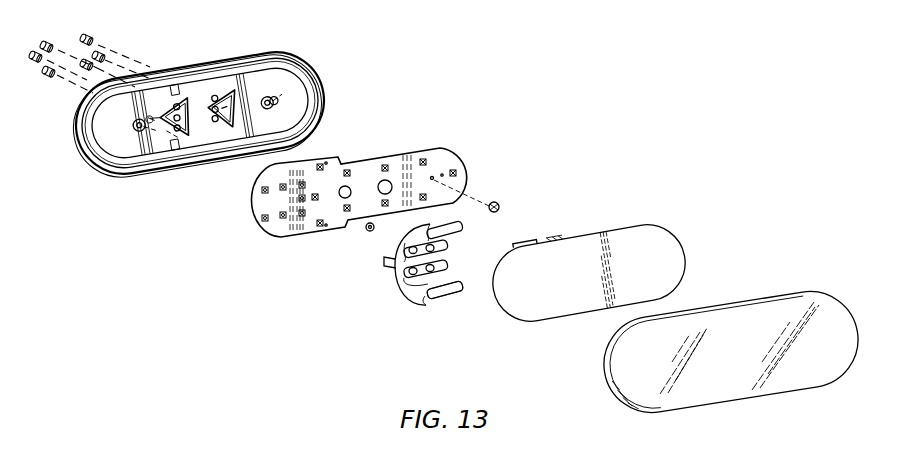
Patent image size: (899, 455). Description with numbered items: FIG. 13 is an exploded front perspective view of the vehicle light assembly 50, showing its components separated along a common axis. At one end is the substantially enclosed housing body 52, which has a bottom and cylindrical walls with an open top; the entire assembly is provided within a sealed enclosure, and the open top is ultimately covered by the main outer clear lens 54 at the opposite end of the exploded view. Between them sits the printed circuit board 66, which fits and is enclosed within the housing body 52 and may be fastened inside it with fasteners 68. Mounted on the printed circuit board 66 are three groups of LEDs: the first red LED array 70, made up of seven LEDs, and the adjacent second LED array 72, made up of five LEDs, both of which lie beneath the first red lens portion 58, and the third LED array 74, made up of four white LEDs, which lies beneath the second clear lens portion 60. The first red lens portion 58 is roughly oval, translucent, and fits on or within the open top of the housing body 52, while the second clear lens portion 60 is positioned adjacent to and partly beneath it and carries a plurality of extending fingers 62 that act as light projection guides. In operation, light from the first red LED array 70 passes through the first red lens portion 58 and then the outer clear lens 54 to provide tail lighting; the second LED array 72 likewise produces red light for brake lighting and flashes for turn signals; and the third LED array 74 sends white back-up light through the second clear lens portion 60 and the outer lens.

The light assembly 50 is at (516, 82).
The housing body 52 is at (328, 96).
The outer clear lens 54 is at (803, 375).
The first red lens portion 58 is at (667, 253).
The second clear lens portion 60 is at (421, 298).
The extending fingers 62 is at (464, 296).
The printed circuit board 66 is at (275, 226).
The fasteners 68 is at (498, 204).
The first red LED array 70 is at (348, 170).
The second LED array 72 is at (298, 200).
The third LED array 74 is at (279, 187).